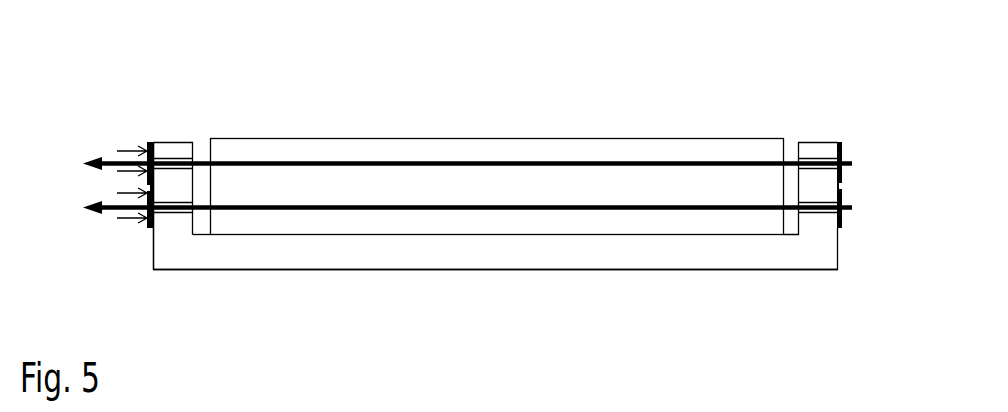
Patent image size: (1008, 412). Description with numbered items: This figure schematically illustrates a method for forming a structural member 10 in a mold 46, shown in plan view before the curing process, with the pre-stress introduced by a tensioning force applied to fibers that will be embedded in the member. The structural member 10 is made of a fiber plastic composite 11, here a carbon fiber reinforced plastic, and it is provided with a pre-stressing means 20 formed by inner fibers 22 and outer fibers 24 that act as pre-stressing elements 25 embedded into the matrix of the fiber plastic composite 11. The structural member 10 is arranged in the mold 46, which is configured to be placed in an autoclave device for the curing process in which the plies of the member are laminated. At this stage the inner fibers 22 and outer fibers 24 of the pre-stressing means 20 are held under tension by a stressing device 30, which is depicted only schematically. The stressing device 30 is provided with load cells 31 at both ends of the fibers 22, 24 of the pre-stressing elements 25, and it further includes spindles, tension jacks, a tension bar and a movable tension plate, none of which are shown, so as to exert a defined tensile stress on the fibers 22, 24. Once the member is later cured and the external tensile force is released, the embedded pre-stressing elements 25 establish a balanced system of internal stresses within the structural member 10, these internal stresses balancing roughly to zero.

The structural member 10 is at (528, 278).
The fiber plastic composite 11 is at (365, 152).
The pre-stressing means 20 is at (826, 118).
The inner fibers 22 is at (198, 208).
The outer fibers 24 is at (200, 163).
The pre-stressing elements 25 is at (642, 146).
The stressing device 30 is at (137, 128).
The load cells 31 is at (145, 227).
The mold 46 is at (748, 253).